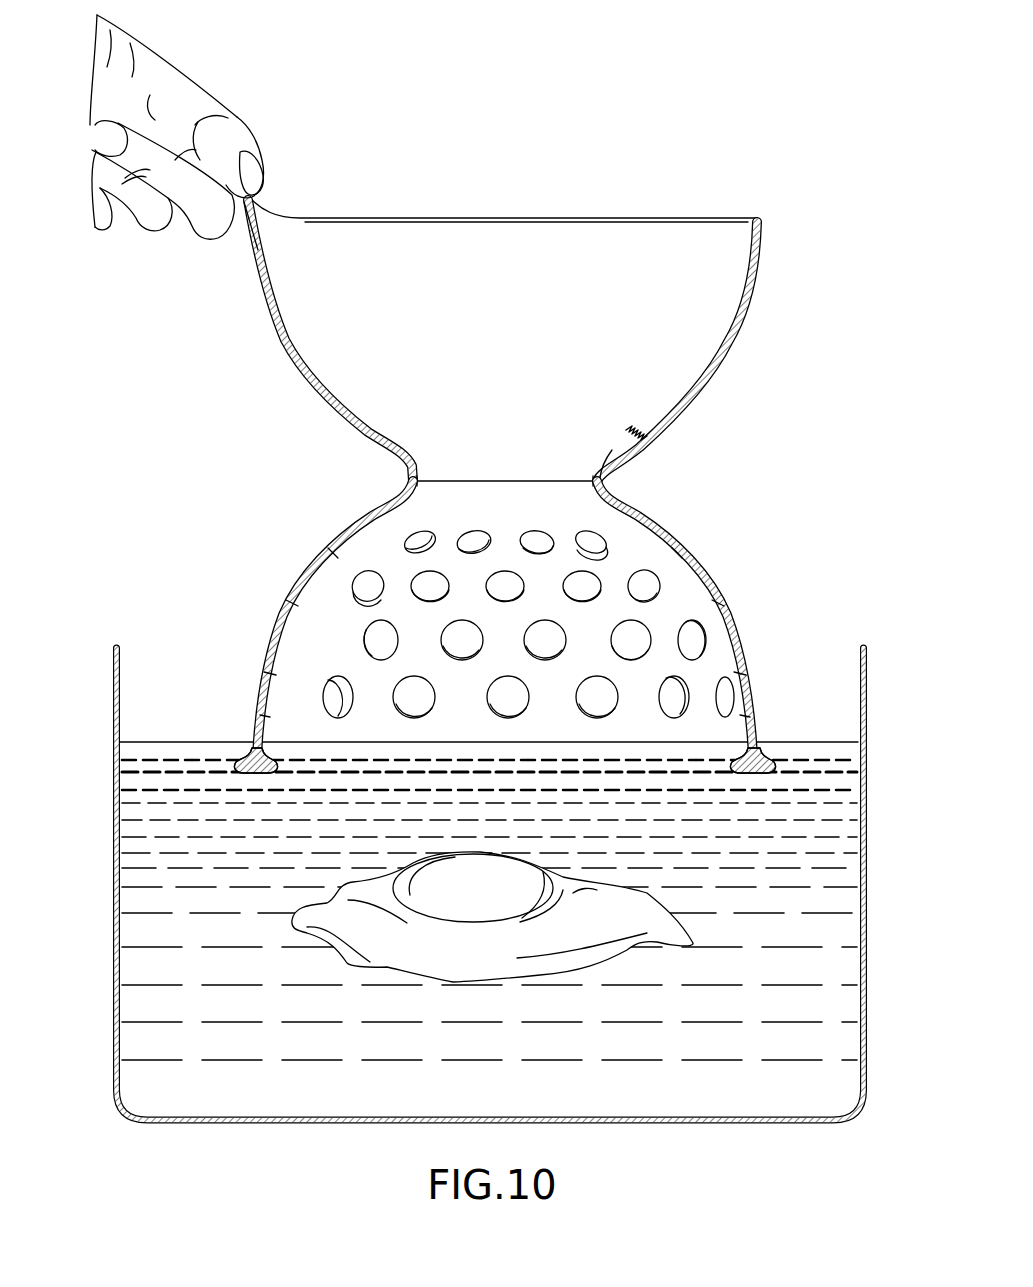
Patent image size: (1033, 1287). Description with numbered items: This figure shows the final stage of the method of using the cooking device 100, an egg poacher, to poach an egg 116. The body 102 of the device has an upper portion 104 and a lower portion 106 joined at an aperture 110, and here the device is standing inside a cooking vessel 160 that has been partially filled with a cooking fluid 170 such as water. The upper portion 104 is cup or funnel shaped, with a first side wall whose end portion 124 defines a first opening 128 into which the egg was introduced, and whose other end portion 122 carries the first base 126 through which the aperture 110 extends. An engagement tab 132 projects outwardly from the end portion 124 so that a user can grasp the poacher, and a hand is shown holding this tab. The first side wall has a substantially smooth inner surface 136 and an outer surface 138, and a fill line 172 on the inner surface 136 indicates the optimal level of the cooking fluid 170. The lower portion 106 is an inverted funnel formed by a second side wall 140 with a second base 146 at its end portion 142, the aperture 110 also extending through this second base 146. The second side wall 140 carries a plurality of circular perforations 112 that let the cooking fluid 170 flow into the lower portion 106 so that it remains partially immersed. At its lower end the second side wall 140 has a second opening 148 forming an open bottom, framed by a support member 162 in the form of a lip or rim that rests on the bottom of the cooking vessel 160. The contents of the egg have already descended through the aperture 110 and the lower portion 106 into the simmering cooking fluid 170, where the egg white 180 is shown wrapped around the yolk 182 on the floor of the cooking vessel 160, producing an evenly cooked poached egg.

The cooking device 100 is at (721, 148).
The body 102 is at (732, 462).
The upper portion 104 is at (228, 350).
The lower portion 106 is at (782, 537).
The aperture 110 is at (503, 466).
The perforation 112 is at (461, 660).
The egg 116 is at (596, 1007).
The end portion 122 is at (611, 462).
The end portion 124 is at (270, 247).
The first base 126 is at (414, 462).
The first opening 128 is at (503, 241).
The engagement tab 132 is at (216, 229).
The inner surface 136 is at (291, 350).
The outer surface 138 is at (742, 337).
The second side wall 140 is at (273, 632).
The end portion 142 is at (592, 488).
The second base 146 is at (420, 488).
The second opening 148 is at (727, 733).
The cooking vessel 160 is at (866, 648).
The support member 162 is at (762, 765).
The cooking fluid 170 is at (162, 740).
The fill line 172 is at (638, 424).
The egg white 180 is at (458, 975).
The yolk 182 is at (503, 897).